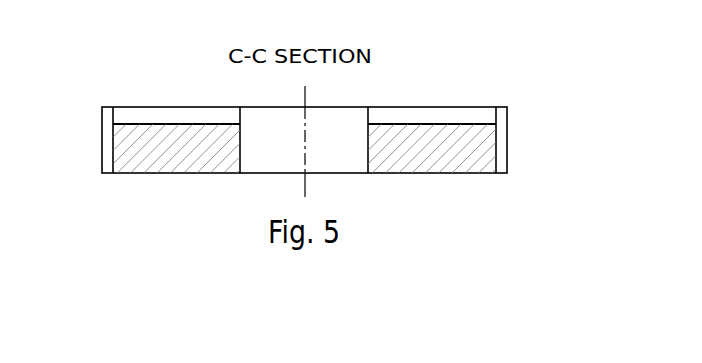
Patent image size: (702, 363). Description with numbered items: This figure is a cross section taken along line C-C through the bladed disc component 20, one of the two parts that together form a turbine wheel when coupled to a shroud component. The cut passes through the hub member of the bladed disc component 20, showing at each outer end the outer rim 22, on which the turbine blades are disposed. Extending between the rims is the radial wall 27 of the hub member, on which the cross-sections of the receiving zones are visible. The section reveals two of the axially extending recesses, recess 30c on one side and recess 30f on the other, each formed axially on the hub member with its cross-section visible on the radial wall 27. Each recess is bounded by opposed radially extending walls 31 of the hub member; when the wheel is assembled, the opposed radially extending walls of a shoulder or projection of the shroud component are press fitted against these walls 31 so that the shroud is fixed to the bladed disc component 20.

The bladed disc component 20 is at (490, 71).
The outer rim 22 is at (97, 132).
The radial wall 27 is at (160, 113).
The radially extending walls 31 is at (107, 148).
The axially extending recess 30c is at (103, 165).
The axially extending recess 30f is at (508, 163).